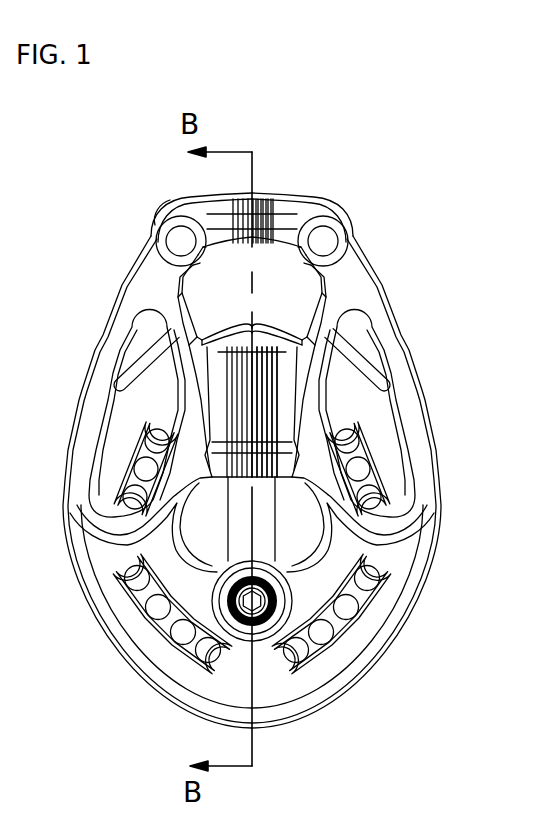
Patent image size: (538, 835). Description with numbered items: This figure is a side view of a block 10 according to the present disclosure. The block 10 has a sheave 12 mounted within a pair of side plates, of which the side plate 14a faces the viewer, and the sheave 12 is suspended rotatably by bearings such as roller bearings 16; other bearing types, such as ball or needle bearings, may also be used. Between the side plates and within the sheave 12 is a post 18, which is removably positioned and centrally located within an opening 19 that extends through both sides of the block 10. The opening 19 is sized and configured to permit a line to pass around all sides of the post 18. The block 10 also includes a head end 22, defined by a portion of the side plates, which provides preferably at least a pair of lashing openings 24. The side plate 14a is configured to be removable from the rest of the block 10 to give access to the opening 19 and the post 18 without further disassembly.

The block 10 is at (370, 193).
The sheave 12 is at (268, 718).
The side plate 14a is at (390, 330).
The roller bearings 16 is at (352, 597).
The post 18 is at (238, 522).
The opening 19 is at (302, 512).
The head end 22 is at (198, 213).
The lashing openings 24 is at (177, 240).